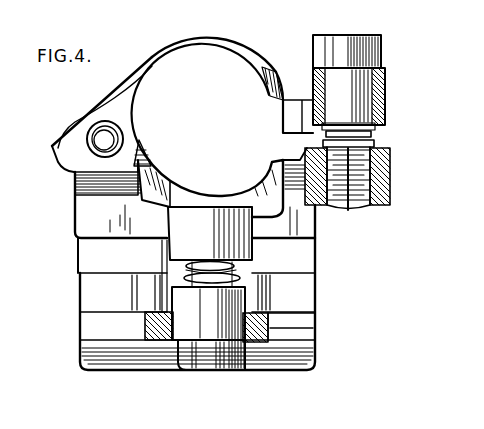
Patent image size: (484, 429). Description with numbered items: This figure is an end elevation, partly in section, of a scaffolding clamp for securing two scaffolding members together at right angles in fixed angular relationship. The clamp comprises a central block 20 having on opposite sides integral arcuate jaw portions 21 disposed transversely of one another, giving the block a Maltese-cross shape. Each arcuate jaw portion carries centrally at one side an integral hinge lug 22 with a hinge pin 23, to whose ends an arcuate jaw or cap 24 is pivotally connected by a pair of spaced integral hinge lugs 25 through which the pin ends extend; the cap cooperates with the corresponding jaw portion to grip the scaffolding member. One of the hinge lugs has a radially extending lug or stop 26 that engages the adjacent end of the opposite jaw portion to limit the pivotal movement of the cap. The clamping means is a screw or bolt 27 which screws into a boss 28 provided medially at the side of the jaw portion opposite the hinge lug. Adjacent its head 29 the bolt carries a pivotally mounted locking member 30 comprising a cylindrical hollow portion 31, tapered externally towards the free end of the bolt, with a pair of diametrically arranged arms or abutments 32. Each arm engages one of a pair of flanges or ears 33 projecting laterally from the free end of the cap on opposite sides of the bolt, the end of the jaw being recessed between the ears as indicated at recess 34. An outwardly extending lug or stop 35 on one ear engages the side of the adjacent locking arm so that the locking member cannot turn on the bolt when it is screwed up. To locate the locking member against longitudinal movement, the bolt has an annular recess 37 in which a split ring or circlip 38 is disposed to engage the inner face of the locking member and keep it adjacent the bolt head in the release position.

The central block 20 is at (100, 218).
The arcuate jaw portions 21 is at (167, 183).
The hinge lug 22 is at (72, 180).
The hinge pin 23 is at (106, 138).
The arcuate jaw or cap 24 is at (222, 45).
The hinge lugs 25 is at (128, 131).
The lug or stop 26 is at (65, 147).
The screw or bolt 27 is at (347, 200).
The boss 28 is at (190, 220).
The head 29 is at (332, 45).
The locking member 30 is at (380, 77).
The cylindrical hollow portion 31 is at (318, 80).
The arms or abutments 32 is at (145, 325).
The flanges or ears 33 is at (153, 285).
The recess 34 is at (297, 117).
The lug or stop 35 is at (272, 320).
The annular recess 37 is at (338, 121).
The split ring or circlip 38 is at (185, 272).